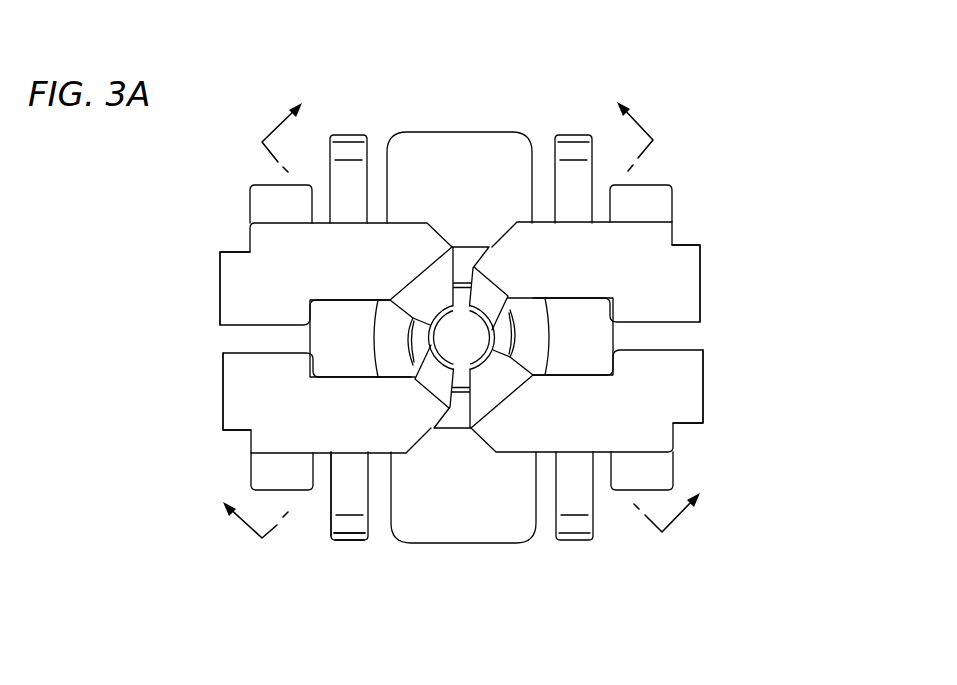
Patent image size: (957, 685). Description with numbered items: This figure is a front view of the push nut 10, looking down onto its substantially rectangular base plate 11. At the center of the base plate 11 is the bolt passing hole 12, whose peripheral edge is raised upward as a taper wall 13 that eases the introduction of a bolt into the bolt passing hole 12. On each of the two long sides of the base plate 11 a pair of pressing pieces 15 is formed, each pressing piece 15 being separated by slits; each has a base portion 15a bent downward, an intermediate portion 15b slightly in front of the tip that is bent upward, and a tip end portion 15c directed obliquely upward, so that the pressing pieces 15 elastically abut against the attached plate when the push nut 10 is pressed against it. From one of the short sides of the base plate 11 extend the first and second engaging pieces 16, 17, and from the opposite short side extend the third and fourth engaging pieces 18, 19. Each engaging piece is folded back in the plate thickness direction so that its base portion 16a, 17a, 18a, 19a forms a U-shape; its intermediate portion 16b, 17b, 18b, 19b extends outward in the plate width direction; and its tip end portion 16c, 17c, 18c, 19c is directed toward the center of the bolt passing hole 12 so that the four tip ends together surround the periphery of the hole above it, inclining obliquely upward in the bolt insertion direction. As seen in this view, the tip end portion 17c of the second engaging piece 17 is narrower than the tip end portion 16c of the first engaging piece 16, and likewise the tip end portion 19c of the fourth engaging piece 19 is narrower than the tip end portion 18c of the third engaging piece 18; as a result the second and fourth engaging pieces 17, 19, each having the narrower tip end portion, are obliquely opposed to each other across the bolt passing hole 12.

The push nut 10 is at (728, 110).
The base plate 11 is at (489, 527).
The bolt passing hole 12 is at (436, 338).
The taper wall 13 is at (538, 337).
The pressing piece 15 is at (349, 172).
The base portion 15a is at (345, 493).
The intermediate portion 15b is at (350, 535).
The tip end portion 15c is at (368, 514).
The first engaging piece 16 is at (273, 248).
The base portion 16a is at (220, 294).
The intermediate portion 16b is at (330, 260).
The tip end portion 16c is at (432, 282).
The second engaging piece 17 is at (275, 432).
The base portion 17a is at (220, 396).
The intermediate portion 17b is at (328, 435).
The tip end portion 17c is at (438, 385).
The third engaging piece 18 is at (645, 420).
The base portion 18a is at (703, 380).
The intermediate portion 18b is at (613, 452).
The tip end portion 18c is at (488, 390).
The fourth engaging piece 19 is at (632, 257).
The base portion 19a is at (703, 287).
The intermediate portion 19b is at (583, 253).
The tip end portion 19c is at (486, 290).